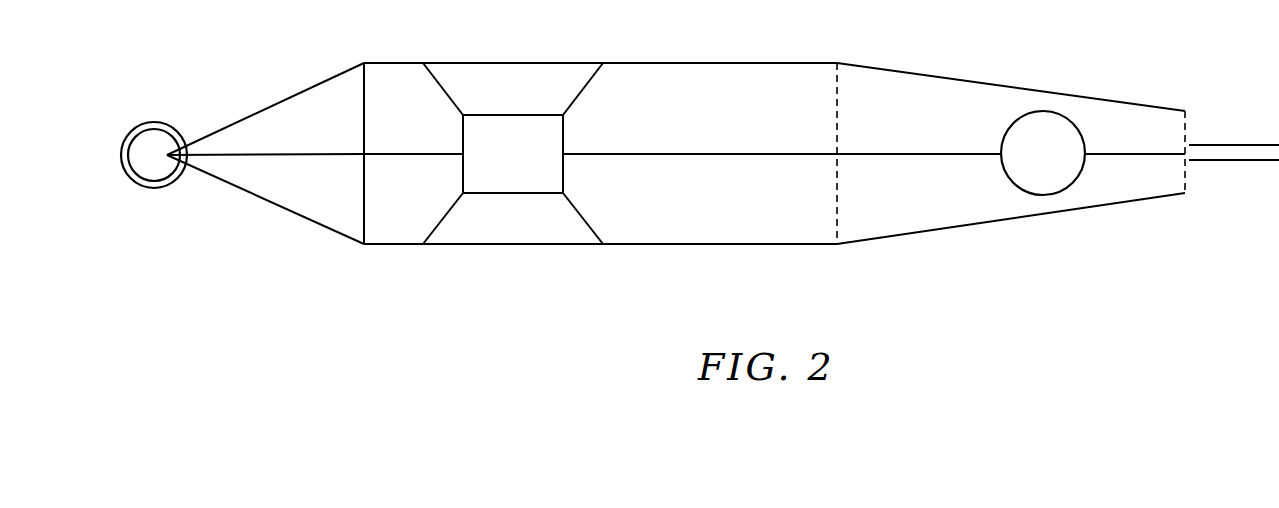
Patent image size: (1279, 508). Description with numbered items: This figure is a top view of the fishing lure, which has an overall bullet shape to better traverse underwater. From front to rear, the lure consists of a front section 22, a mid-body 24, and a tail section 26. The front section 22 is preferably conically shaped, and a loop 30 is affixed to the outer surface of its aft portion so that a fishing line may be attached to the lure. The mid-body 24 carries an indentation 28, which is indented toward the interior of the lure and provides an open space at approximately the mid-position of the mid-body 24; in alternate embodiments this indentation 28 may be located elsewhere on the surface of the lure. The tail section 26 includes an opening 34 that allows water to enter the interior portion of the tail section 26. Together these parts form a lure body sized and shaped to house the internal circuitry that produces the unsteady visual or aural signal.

The front section 22 is at (285, 96).
The mid-body 24 is at (740, 246).
The tail section 26 is at (1117, 101).
The indentation 28 is at (508, 128).
The loop 30 is at (139, 121).
The opening 34 is at (1048, 195).